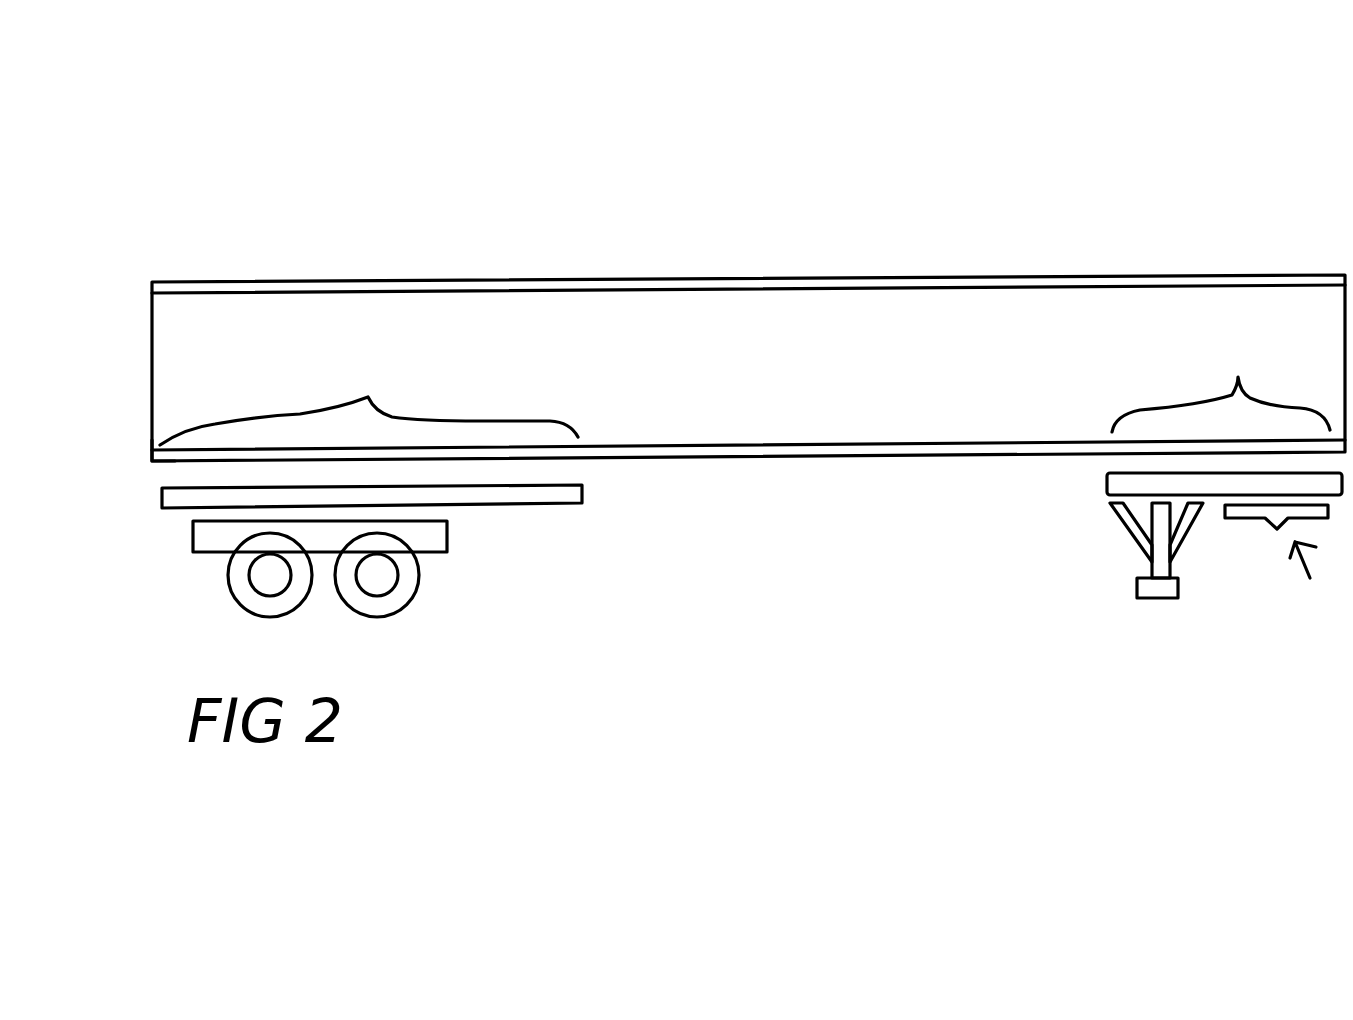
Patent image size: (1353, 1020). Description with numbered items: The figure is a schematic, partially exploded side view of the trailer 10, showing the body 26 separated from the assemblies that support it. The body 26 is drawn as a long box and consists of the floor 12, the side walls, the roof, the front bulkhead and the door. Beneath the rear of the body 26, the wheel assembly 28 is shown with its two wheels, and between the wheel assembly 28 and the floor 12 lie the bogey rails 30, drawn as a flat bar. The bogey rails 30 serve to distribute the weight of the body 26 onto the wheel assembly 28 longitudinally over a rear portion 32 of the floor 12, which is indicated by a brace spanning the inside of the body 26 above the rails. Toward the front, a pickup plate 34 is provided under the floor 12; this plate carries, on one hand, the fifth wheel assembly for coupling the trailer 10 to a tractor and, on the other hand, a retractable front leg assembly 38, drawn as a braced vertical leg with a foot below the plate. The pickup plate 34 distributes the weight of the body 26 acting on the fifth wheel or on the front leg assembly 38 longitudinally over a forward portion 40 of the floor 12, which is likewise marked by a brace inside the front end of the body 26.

The trailer 10 is at (302, 147).
The floor 12 is at (157, 462).
The body 26 is at (701, 250).
The wheel assembly 28 is at (430, 588).
The bogey rails 30 is at (563, 507).
The rear portion 32 is at (369, 403).
The pickup plate 34 is at (1107, 489).
The retractable front leg assembly 38 is at (1115, 608).
The forward portion 40 is at (1221, 461).